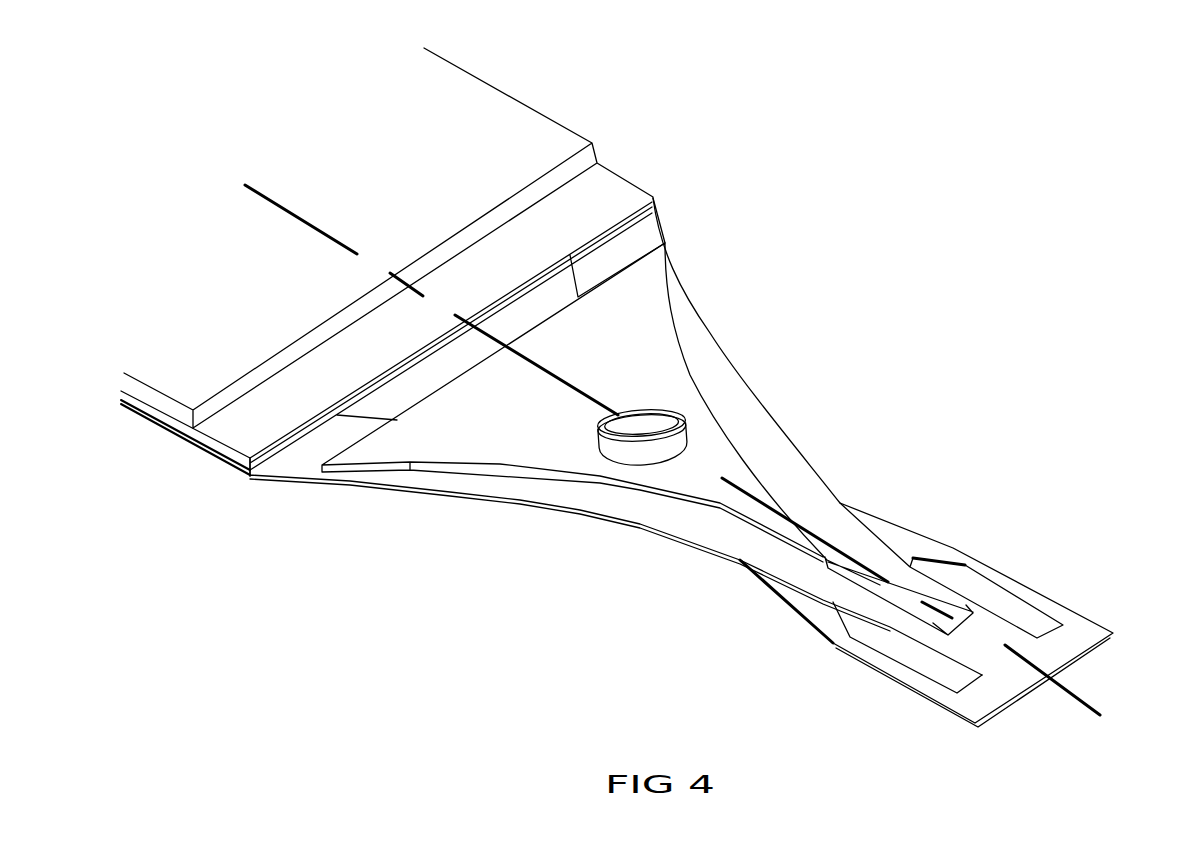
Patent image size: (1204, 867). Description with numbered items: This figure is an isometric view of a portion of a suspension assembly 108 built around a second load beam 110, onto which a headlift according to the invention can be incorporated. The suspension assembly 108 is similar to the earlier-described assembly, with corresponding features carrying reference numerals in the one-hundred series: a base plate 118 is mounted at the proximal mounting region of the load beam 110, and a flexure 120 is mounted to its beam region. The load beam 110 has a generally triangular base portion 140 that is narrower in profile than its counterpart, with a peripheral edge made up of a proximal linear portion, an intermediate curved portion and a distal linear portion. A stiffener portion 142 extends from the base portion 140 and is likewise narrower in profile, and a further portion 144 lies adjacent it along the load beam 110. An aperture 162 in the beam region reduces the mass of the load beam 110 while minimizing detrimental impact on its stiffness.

The suspension assembly 108 is at (512, 103).
The base plate 118 is at (317, 195).
The stiffener block 144 is at (613, 187).
The stiffener portion 142 is at (637, 322).
The aperture 162 is at (690, 460).
The base portion 140 is at (695, 552).
The flexure 120 is at (1067, 607).
The second load beam 110 is at (898, 488).